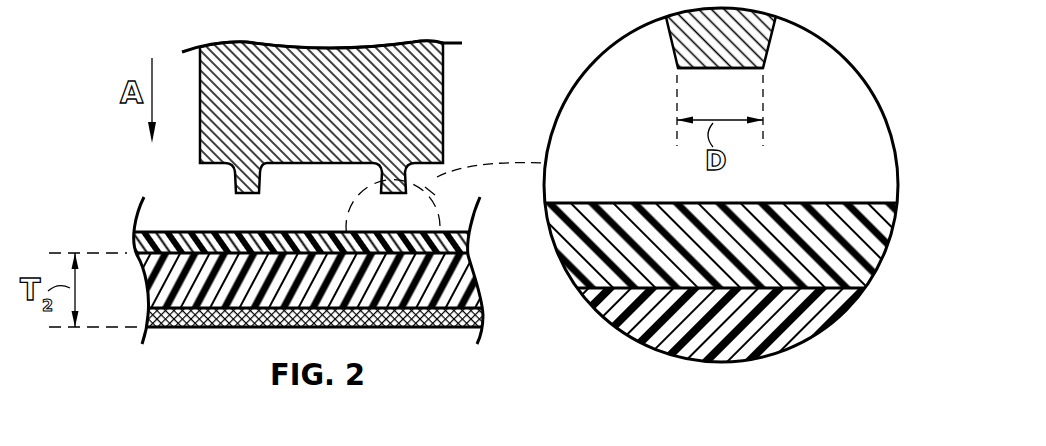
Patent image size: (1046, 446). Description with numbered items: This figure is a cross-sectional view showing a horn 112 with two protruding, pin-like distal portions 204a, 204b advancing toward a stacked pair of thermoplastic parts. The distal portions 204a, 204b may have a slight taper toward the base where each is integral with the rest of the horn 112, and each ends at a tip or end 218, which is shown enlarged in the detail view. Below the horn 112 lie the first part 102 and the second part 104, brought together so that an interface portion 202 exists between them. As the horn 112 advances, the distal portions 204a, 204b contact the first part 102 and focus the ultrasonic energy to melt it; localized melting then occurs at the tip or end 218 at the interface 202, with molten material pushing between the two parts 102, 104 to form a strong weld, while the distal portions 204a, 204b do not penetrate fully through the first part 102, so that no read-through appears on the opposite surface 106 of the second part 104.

The horn 112 is at (440, 62).
The distal portion 204a is at (234, 187).
The second distal portion 204b is at (407, 177).
The tip or end 218 is at (695, 70).
The first part 102 is at (135, 239).
The interface portion 202 is at (717, 280).
The second part 104 is at (149, 284).
The opposite surface 106 is at (194, 328).